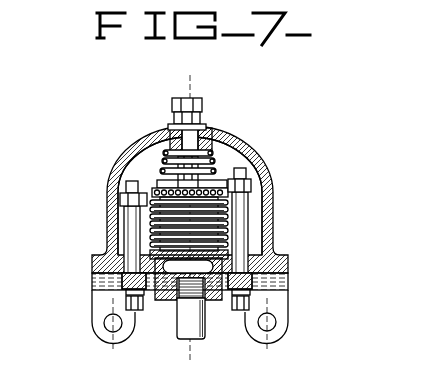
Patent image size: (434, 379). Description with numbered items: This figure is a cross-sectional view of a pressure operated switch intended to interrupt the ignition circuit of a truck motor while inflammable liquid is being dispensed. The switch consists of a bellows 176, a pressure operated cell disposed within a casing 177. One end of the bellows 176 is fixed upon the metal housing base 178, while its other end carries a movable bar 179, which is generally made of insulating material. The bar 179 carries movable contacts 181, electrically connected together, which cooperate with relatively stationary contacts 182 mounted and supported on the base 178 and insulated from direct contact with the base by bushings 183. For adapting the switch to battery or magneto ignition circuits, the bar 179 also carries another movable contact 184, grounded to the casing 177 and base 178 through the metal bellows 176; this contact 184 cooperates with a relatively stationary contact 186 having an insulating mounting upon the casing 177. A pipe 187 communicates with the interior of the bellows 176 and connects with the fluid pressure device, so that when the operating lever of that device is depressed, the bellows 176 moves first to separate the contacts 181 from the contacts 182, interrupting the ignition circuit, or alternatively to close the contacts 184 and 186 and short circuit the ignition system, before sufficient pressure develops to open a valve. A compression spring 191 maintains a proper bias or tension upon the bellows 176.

The bellows 176 is at (266, 208).
The casing 177 is at (228, 236).
The housing base 178 is at (284, 285).
The movable bar 179 is at (229, 186).
The movable contacts 181 is at (121, 201).
The stationary contacts 182 is at (126, 218).
The bushings 183 is at (122, 281).
The movable contact 184 is at (216, 176).
The stationary contact 186 is at (205, 130).
The pipe 187 is at (188, 318).
The compression spring 191 is at (214, 162).